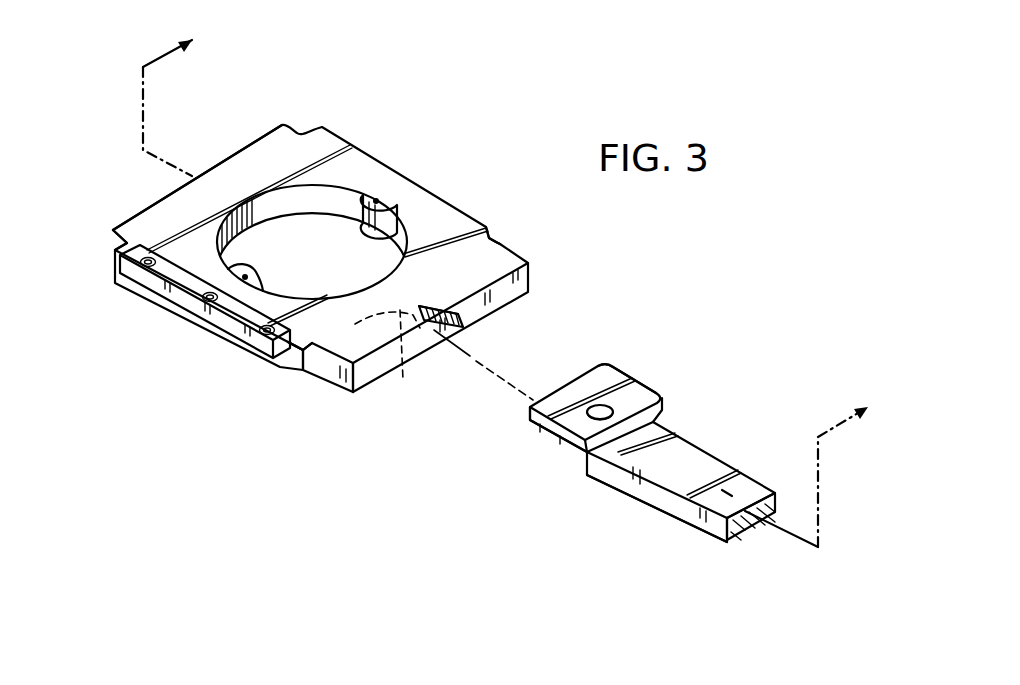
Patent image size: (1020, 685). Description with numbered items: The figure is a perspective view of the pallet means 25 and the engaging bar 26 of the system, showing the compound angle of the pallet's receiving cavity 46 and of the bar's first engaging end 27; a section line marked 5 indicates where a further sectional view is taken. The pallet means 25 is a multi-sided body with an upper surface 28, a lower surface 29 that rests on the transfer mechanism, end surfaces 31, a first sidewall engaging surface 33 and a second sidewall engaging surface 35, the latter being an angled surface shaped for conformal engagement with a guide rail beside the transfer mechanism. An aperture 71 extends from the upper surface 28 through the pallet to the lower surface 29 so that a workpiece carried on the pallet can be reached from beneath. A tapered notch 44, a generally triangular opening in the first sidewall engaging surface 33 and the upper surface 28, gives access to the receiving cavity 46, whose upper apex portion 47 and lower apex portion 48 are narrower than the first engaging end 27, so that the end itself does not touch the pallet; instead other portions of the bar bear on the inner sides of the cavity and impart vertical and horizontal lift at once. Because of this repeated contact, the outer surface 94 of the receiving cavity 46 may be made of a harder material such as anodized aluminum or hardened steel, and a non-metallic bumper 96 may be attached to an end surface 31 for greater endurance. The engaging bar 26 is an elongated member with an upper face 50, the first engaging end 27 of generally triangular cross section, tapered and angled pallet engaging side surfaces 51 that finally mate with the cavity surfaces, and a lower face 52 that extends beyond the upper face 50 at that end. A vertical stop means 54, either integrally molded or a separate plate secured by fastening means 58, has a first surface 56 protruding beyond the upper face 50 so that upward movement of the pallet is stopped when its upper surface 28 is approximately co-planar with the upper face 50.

The section line for FIG. 5 is at (518, 284).
The pallet means 25 is at (467, 279).
The engaging bar 26 is at (745, 523).
The first engaging end 27 is at (547, 405).
The upper surface 28 is at (162, 208).
The lower surface 29 is at (302, 370).
The end surfaces 31 is at (410, 183).
The first sidewall engaging surface 33 is at (367, 384).
The second sidewall engaging surface 35 is at (113, 233).
The tapered notch 44 is at (427, 340).
The receiving cavity 46 is at (406, 359).
The upper apex portion 47 is at (428, 309).
The lower apex portion 48 is at (371, 328).
The upper face 50 is at (705, 460).
The pallet engaging side surfaces 51 is at (577, 425).
The lower face 52 is at (690, 520).
The vertical stop means 54 is at (637, 387).
The first surface 56 is at (548, 433).
The fastening means 58 is at (652, 394).
The aperture 71 is at (320, 265).
The outer surface 94 is at (431, 322).
The non-metallic bumper 96 is at (182, 290).